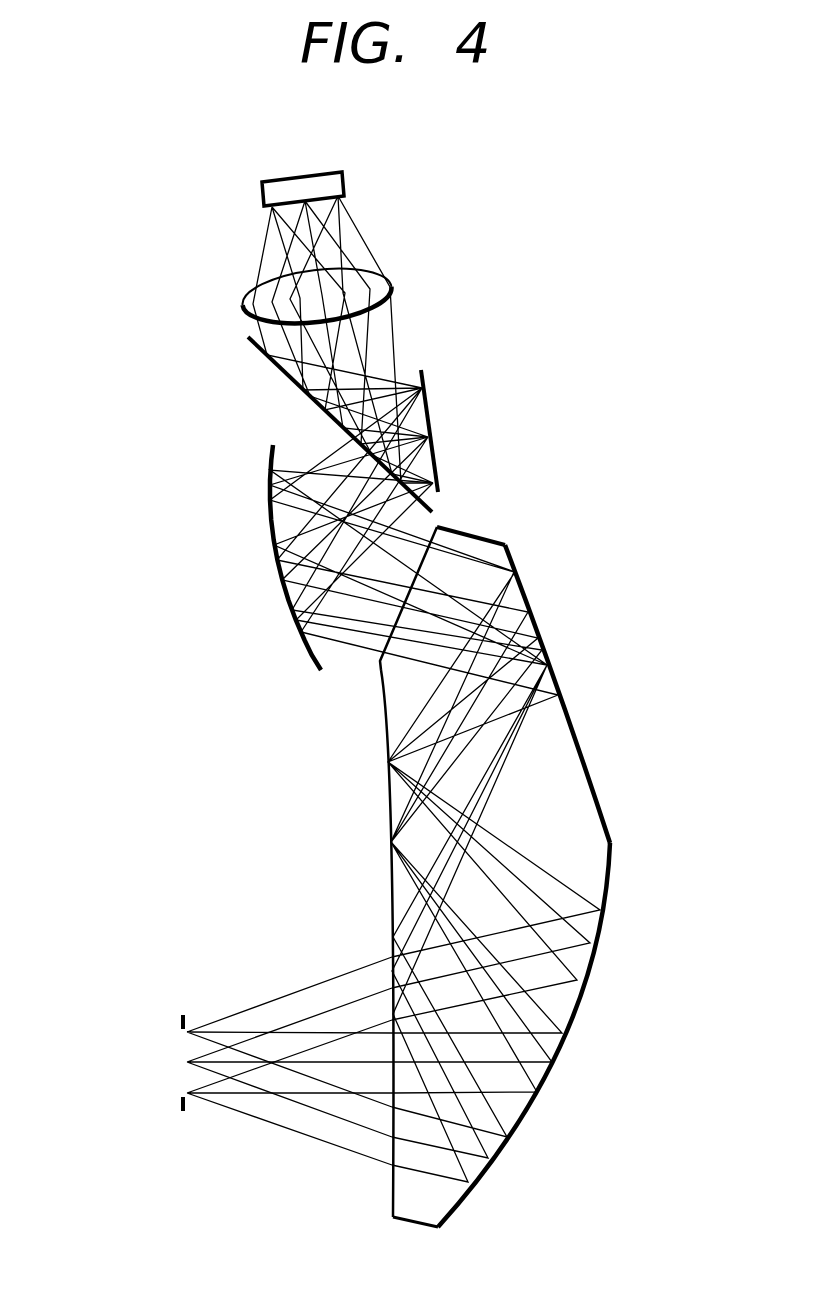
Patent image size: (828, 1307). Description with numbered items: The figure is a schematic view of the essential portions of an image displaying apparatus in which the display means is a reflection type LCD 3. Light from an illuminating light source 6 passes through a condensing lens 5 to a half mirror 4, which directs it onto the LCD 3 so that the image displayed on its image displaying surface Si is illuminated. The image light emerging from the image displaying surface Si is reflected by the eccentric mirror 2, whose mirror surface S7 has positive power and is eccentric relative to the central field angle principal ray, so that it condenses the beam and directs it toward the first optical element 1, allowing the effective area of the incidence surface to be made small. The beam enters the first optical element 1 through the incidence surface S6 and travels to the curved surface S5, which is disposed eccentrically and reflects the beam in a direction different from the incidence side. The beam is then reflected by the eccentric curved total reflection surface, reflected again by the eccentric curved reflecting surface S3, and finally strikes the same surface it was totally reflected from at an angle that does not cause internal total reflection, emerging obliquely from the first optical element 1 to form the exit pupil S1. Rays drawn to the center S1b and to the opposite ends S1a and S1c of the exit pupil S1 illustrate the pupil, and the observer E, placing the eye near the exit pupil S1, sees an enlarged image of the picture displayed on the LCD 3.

The first optical element 1 is at (455, 877).
The eccentric mirror 2 is at (272, 447).
The LCD (liquid crystal display element) 3 is at (438, 476).
The half mirror 4 is at (281, 370).
The condensing lens 5 is at (258, 296).
The illuminating light source 6 is at (300, 188).
The image displaying surface Si is at (424, 396).
The exit pupil S1 is at (182, 1017).
The end of exit pupil S1a is at (185, 1032).
The center of exit pupil S1b is at (187, 1062).
The end of exit pupil S1c is at (187, 1093).
The reflecting surface S3 is at (568, 1035).
The reflecting surface S5 is at (540, 608).
The incidence surface S6 is at (380, 662).
The reflecting surface (mirror surface) S7 is at (272, 552).
The observer E is at (178, 1123).